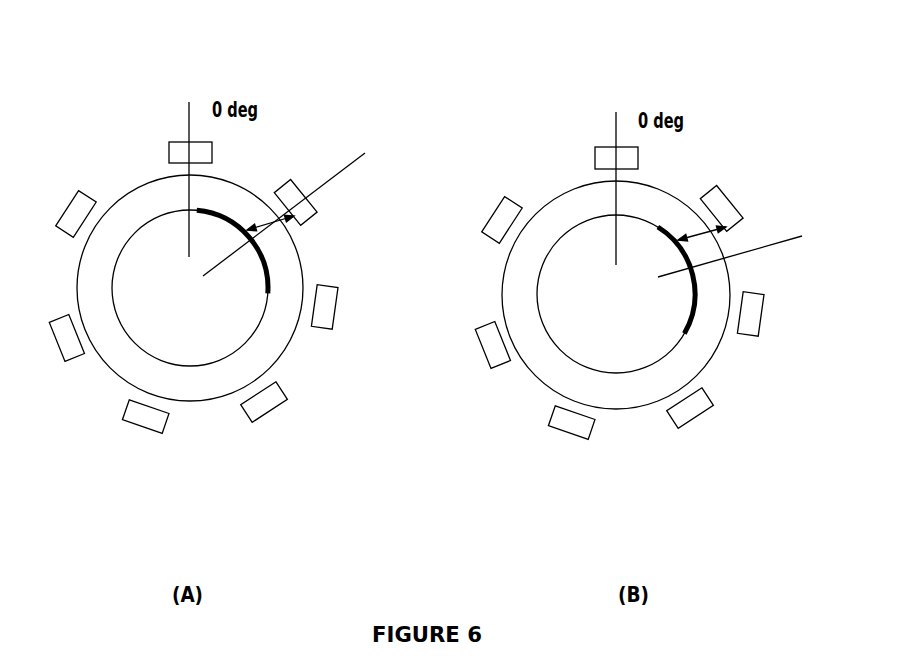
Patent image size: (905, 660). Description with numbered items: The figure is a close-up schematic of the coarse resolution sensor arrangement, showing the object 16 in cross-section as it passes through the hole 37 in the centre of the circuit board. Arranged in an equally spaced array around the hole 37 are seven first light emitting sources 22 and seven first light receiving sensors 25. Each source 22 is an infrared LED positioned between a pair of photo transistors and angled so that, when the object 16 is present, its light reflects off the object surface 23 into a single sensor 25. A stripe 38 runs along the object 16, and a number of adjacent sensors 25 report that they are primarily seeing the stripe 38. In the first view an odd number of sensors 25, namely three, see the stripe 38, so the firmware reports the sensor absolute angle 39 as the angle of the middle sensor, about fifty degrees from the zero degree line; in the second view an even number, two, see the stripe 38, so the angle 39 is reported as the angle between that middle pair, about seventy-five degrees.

In FIG. 6A, the object 16 is at (191, 299).
In FIG. 6B, the object 16 is at (614, 299).
In FIG. 6A, the first light emitting source 22 is at (291, 181).
In FIG. 6B, the first light emitting source 22 is at (720, 192).
In FIG. 6A, the object surface 23 is at (255, 338).
In FIG. 6B, the object surface 23 is at (616, 294).
In FIG. 6A, the first light receiving sensor 25 is at (349, 194).
In FIG. 6B, the first light receiving sensor 25 is at (774, 203).
In FIG. 6A, the hole 37 is at (142, 205).
In FIG. 6B, the hole 37 is at (565, 203).
In FIG. 6A, the stripe 38 is at (223, 213).
In FIG. 6B, the stripe 38 is at (668, 227).
In FIG. 6A, the sensor absolute angle 39 is at (346, 165).
In FIG. 6B, the sensor absolute angle 39 is at (772, 244).